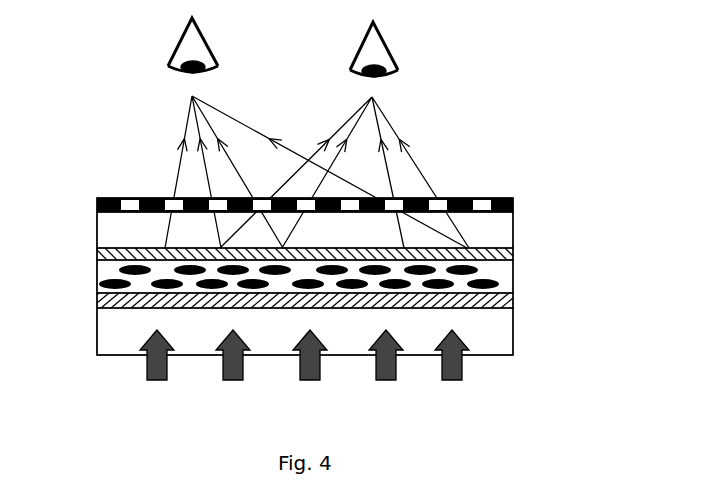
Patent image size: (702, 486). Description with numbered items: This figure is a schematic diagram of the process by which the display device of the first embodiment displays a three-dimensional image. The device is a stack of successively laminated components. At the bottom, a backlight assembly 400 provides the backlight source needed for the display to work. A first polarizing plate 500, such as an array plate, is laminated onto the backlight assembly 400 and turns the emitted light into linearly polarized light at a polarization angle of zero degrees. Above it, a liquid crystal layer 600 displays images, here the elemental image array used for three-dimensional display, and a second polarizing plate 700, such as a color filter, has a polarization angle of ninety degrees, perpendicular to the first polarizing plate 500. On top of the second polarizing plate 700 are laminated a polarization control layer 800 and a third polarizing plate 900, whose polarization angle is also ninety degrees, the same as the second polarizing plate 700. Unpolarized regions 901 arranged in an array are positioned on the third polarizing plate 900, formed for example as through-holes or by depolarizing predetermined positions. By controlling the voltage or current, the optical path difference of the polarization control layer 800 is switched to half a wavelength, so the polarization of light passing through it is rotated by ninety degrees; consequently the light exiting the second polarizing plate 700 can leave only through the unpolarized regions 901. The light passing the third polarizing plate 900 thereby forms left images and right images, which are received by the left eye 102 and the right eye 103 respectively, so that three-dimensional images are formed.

The left eye 102 is at (410, 62).
The right eye 103 is at (162, 78).
The backlight assembly 400 is at (488, 342).
The first polarizing plate 500 is at (513, 300).
The liquid crystal layer 600 is at (513, 275).
The second polarizing plate 700 is at (513, 250).
The polarization control layer 800 is at (513, 226).
The third polarizing plate 900 is at (513, 204).
The unpolarized regions 901 is at (132, 212).